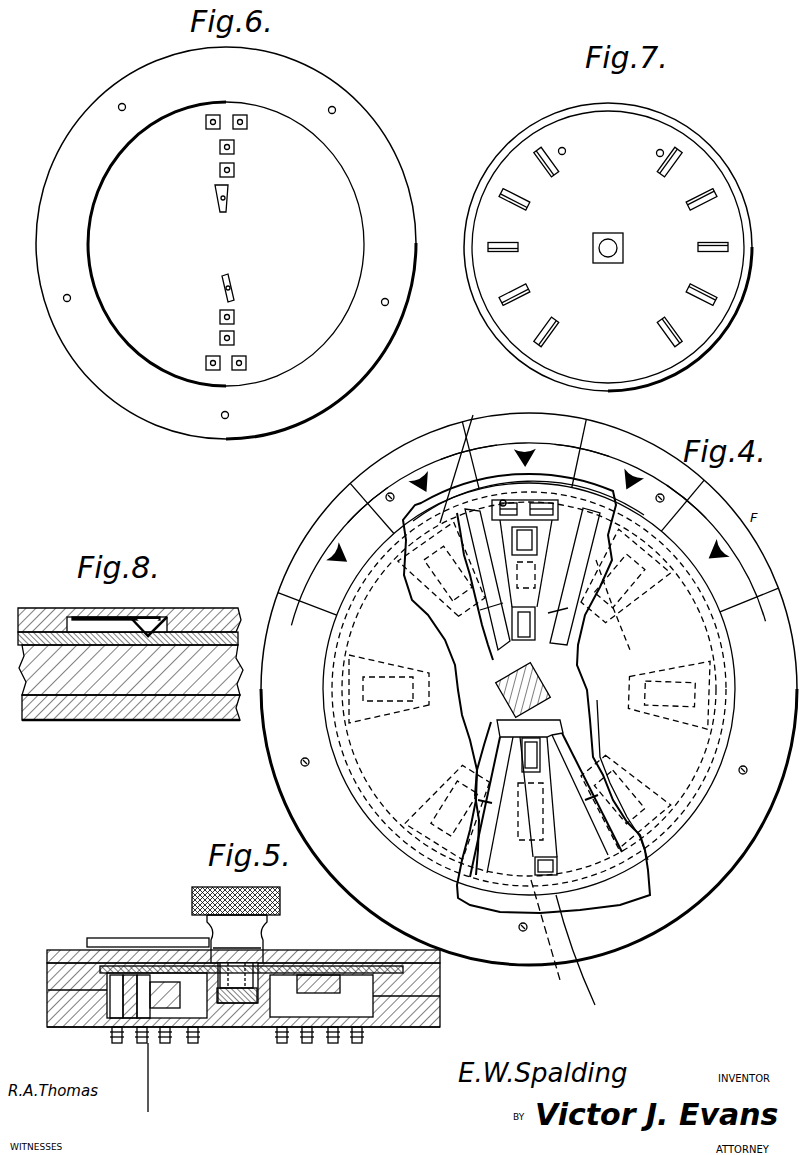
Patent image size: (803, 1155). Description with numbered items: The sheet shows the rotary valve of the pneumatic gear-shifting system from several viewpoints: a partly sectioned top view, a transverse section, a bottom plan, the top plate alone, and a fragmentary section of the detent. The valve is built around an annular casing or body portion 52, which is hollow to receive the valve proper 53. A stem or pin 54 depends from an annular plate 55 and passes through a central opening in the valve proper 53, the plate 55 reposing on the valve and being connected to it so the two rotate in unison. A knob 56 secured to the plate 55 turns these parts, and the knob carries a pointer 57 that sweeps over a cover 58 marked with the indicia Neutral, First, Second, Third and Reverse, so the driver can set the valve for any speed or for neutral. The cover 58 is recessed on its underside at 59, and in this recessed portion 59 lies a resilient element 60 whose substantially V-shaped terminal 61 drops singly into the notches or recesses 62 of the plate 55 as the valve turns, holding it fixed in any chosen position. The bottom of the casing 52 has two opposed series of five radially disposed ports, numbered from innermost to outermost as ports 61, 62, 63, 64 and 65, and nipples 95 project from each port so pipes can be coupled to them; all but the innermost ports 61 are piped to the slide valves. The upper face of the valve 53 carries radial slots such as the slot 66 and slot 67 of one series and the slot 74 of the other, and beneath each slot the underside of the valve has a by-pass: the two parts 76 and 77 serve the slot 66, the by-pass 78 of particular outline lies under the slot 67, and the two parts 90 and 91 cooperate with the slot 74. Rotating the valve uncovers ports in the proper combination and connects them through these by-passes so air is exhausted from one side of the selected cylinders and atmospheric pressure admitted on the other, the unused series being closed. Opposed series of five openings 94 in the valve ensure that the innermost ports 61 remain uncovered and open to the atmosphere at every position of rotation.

In FIG. 6, the annular casing or body portion 52 is at (310, 405).
In FIG. 8, the annular casing or body portion 52 is at (220, 713).
In FIG. 5, the annular casing or body portion 52 is at (442, 1013).
In FIG. 4, the annular casing or body portion 52 is at (613, 890).
In FIG. 7, the valve proper 53 is at (687, 363).
In FIG. 8, the valve proper 53 is at (90, 680).
In FIG. 5, the valve proper 53 is at (75, 1027).
In FIG. 4, the valve proper 53 is at (578, 500).
In FIG. 5, the stem or pin 54 is at (258, 968).
In FIG. 7, the annular plate 55 is at (608, 269).
In FIG. 8, the annular plate 55 is at (120, 637).
In FIG. 5, the annular plate 55 is at (305, 975).
In FIG. 4, the annular plate 55 is at (463, 460).
In FIG. 5, the knob 56 is at (192, 889).
In FIG. 5, the pointer 57 is at (145, 940).
In FIG. 8, the cover 58 is at (46, 611).
In FIG. 5, the cover 58 is at (52, 951).
In FIG. 4, the cover 58 is at (410, 443).
In FIG. 8, the recessed portion 59 is at (163, 620).
In FIG. 8, the resilient element 60 is at (135, 618).
In FIG. 6, the V-shaped terminal; innermost port 61 is at (229, 198).
In FIG. 8, the V-shaped terminal; innermost port 61 is at (200, 605).
In FIG. 5, the V-shaped terminal; innermost port 61 is at (191, 1020).
In FIG. 4, the V-shaped terminal; innermost port 61 is at (538, 665).
In FIG. 6, the notches or recesses; second port 62 is at (235, 170).
In FIG. 7, the notches or recesses; second port 62 is at (505, 195).
In FIG. 8, the notches or recesses; second port 62 is at (147, 637).
In FIG. 5, the notches or recesses; second port 62 is at (160, 1045).
In FIG. 4, the notches or recesses; second port 62 is at (523, 634).
In FIG. 6, the port 63 is at (235, 147).
In FIG. 5, the port 63 is at (333, 1043).
In FIG. 4, the port 63 is at (527, 542).
In FIG. 6, the port 64 is at (208, 130).
In FIG. 5, the port 64 is at (113, 1015).
In FIG. 4, the port 64 is at (532, 500).
In FIG. 6, the port 65 is at (248, 122).
In FIG. 5, the port 65 is at (357, 1043).
In FIG. 4, the port 65 is at (560, 497).
In FIG. 4, the slot 66 is at (577, 597).
In FIG. 5, the slot 67 is at (165, 983).
In FIG. 4, the slot 67 is at (495, 499).
In FIG. 5, the slot 74 is at (282, 966).
In FIG. 4, the slot 74 is at (549, 828).
In FIG. 4, the by-pass part 76 is at (529, 691).
In FIG. 4, the by-pass part 77 is at (616, 605).
In FIG. 5, the by-pass 78 is at (63, 994).
In FIG. 4, the by-pass 78 is at (529, 526).
In FIG. 4, the by-pass part 90 is at (586, 959).
In FIG. 5, the by-pass part 91 is at (442, 991).
In FIG. 4, the by-pass part 91 is at (555, 940).
In FIG. 5, the openings 94 is at (197, 1000).
In FIG. 4, the openings 94 is at (526, 693).
In FIG. 5, the nipples 95 is at (143, 1022).